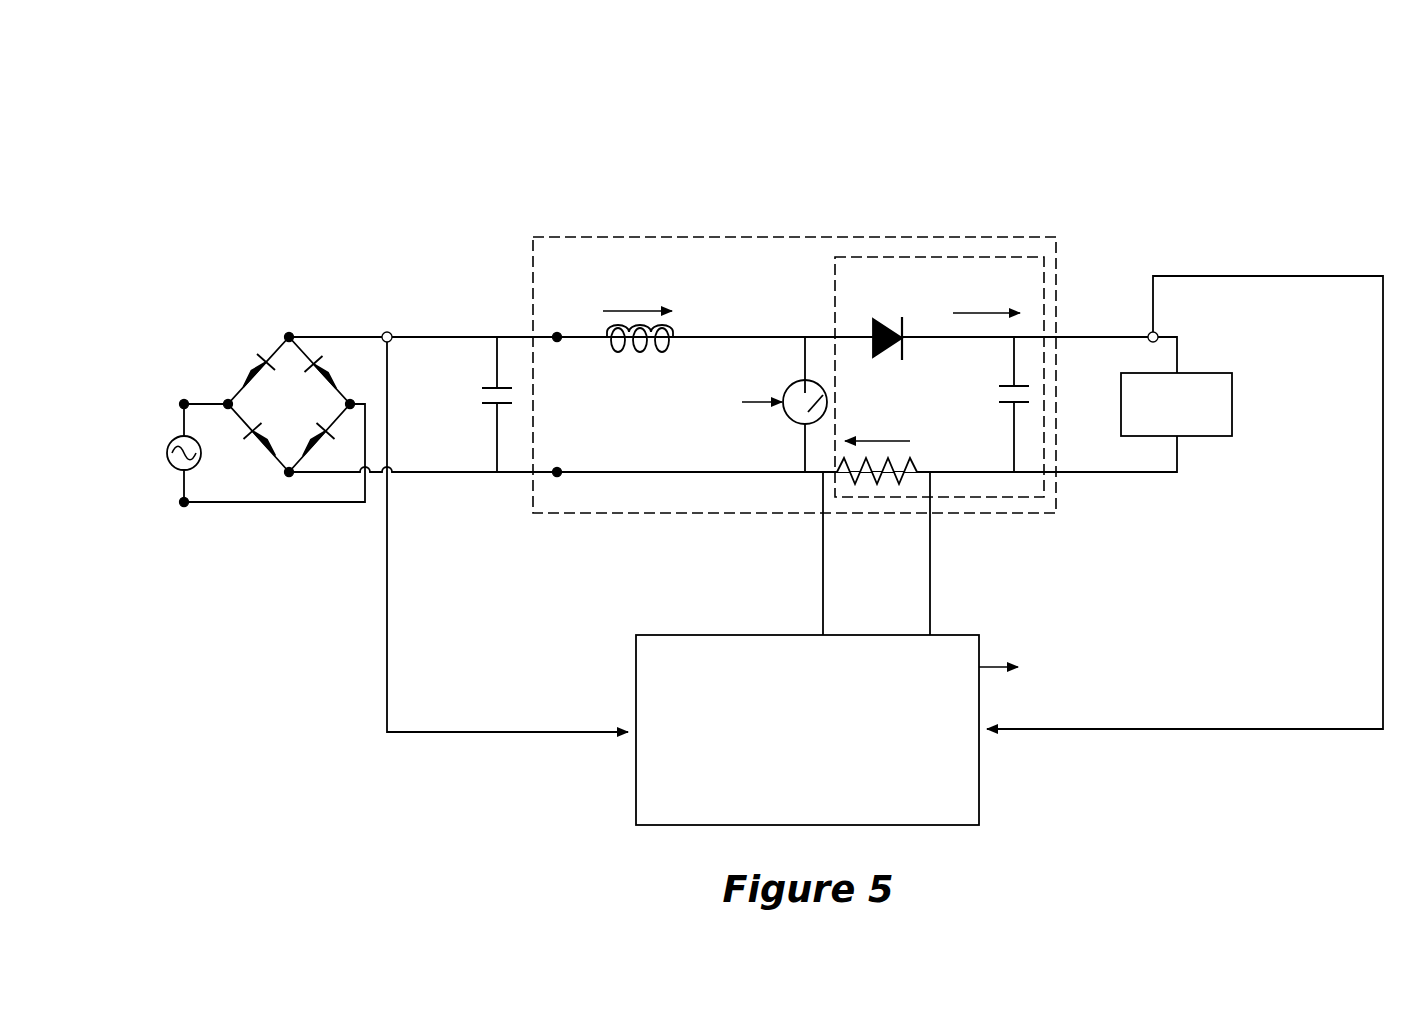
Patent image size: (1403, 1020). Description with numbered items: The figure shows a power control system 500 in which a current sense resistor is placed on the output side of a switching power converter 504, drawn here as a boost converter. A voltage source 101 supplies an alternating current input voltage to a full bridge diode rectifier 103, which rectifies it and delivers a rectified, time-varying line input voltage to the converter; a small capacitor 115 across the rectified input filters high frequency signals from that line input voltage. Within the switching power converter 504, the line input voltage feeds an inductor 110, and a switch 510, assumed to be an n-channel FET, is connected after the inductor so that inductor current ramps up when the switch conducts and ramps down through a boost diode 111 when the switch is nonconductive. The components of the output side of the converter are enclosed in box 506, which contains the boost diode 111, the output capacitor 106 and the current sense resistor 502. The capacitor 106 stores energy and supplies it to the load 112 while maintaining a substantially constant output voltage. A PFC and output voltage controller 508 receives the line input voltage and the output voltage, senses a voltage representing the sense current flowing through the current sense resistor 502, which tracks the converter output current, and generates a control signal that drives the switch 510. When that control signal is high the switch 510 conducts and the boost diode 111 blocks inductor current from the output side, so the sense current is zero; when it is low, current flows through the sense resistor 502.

The power control system 500 is at (1058, 124).
The voltage source 101 is at (172, 468).
The full bridge diode rectifier 103 is at (289, 405).
The capacitor 115 is at (489, 405).
The switching power converter 504 is at (570, 237).
The inductor 110 is at (620, 347).
The switch 510 is at (790, 427).
The box 506 is at (960, 257).
The boost diode 111 is at (883, 324).
The capacitor 106 is at (1009, 404).
The current sense resistor 502 is at (903, 479).
The load 112 is at (1191, 373).
The PFC and output voltage controller 508 is at (656, 634).